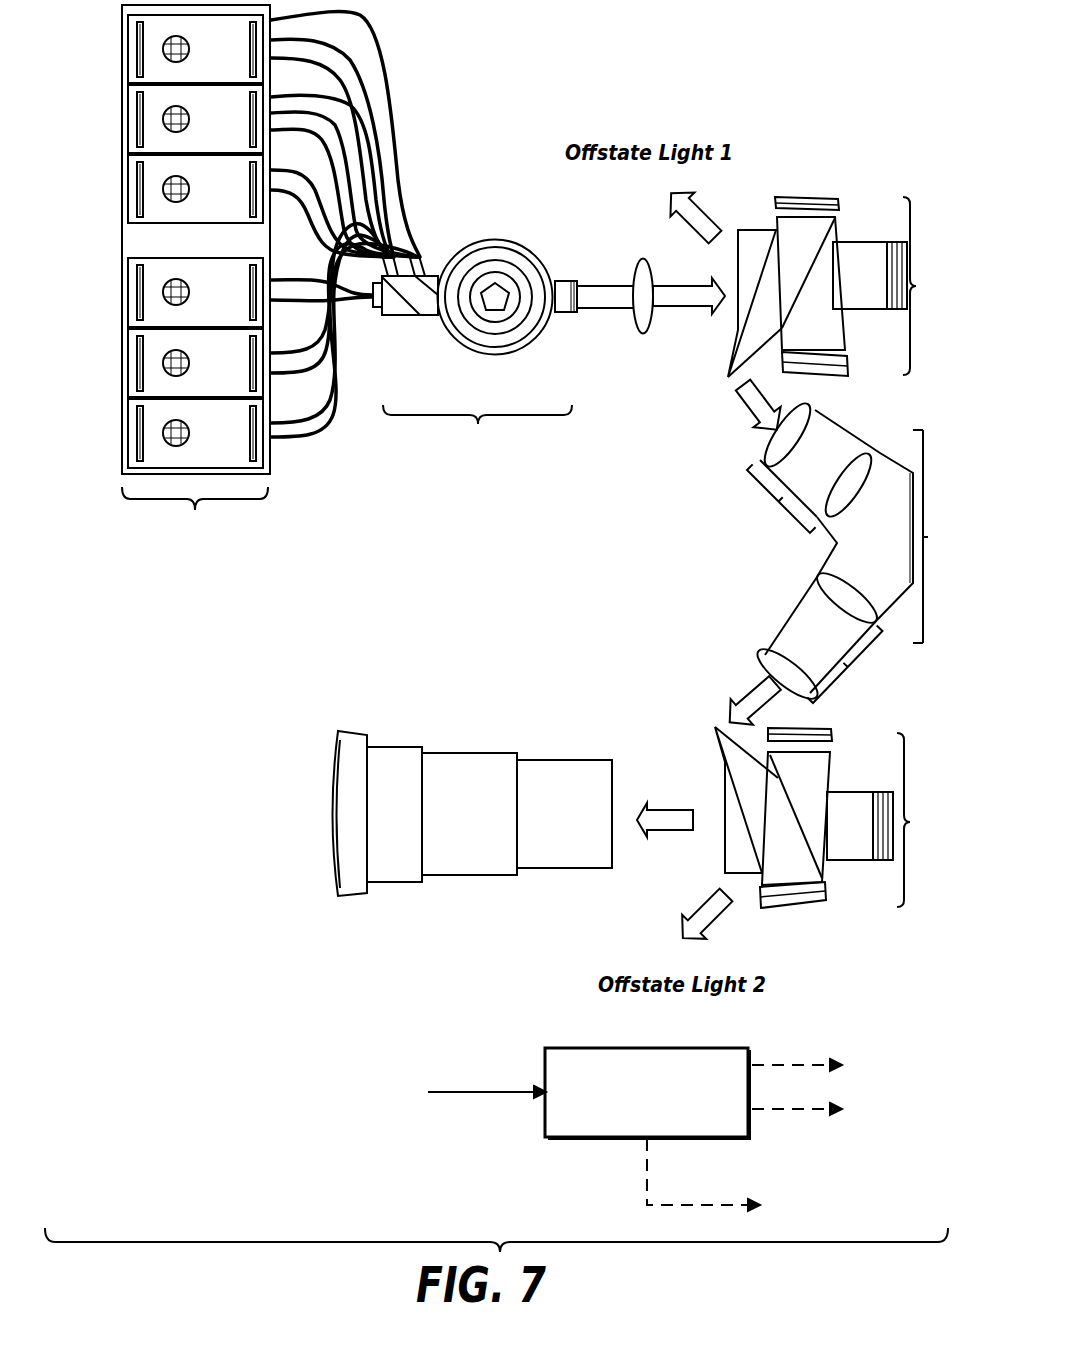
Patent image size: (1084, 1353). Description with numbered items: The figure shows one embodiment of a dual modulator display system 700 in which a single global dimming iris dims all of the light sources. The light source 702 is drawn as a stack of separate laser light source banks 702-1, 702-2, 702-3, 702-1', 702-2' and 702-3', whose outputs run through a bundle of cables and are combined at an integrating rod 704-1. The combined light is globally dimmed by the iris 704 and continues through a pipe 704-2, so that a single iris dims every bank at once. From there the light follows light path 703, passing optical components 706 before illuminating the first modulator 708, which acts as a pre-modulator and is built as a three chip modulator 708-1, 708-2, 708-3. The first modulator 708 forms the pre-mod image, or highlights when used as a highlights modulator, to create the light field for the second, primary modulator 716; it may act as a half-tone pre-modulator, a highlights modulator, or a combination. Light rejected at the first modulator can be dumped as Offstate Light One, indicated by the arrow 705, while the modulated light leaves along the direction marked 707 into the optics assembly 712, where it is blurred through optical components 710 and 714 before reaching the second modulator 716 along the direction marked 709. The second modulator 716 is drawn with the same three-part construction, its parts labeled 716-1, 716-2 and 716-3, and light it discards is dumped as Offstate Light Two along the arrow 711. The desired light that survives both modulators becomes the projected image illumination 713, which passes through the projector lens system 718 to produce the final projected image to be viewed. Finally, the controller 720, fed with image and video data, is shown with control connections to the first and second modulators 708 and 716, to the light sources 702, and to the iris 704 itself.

The dual modulator display system 700 is at (625, 38).
The light source 702 is at (156, 271).
The laser light source bank 702-1 is at (154, 293).
The laser light source bank 702-2 is at (154, 364).
The laser light source bank 702-3 is at (154, 437).
The laser light source bank 702-1' is at (153, 49).
The laser light source bank 702-2' is at (153, 119).
The laser light source bank 702-3' is at (153, 189).
The light path 703 is at (639, 262).
The iris 704 is at (507, 337).
The integrating rod 704-1 is at (393, 318).
The pipe 704-2 is at (563, 280).
The offstate light 1 direction 705 is at (707, 202).
The optical components 706 is at (640, 333).
The light path arrow 707 is at (748, 405).
The first modulator 708 is at (846, 285).
The three chip modulator 708-1 is at (785, 198).
The three chip modulator 708-2 is at (905, 237).
The three chip modulator 708-3 is at (820, 376).
The light path arrow 709 is at (731, 712).
The optical component 710 is at (806, 467).
The offstate light 2 direction 711 is at (686, 922).
The optics assembly 712 is at (928, 537).
The projected image illumination 713 is at (685, 805).
The optical component 714 is at (823, 636).
The second/primary modulator 716 is at (837, 844).
The SLM cover 716-1 is at (833, 746).
The spatial light modulator panel 716-2 is at (870, 863).
The SLM base 716-3 is at (773, 910).
The projector lens system 718 is at (408, 745).
The controller 720 is at (693, 1048).